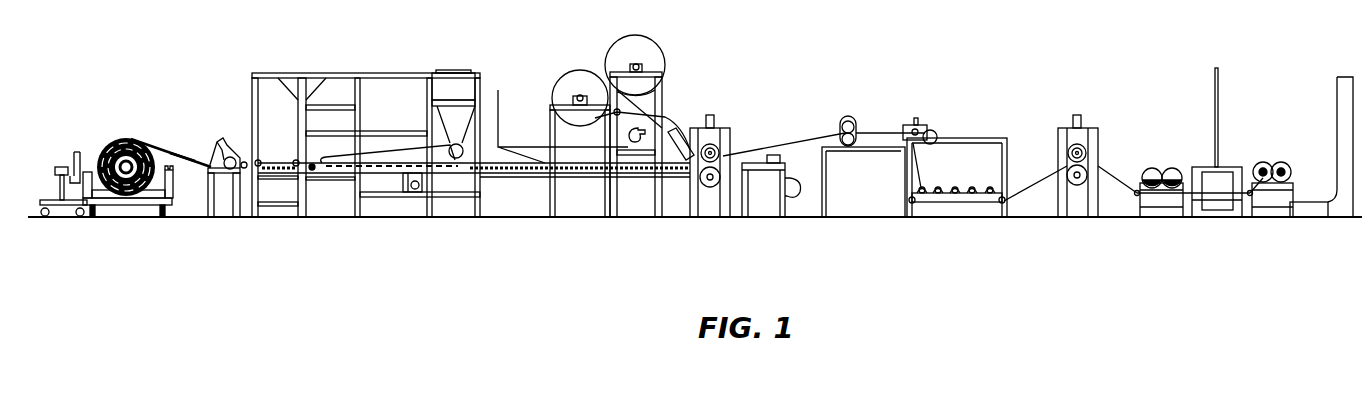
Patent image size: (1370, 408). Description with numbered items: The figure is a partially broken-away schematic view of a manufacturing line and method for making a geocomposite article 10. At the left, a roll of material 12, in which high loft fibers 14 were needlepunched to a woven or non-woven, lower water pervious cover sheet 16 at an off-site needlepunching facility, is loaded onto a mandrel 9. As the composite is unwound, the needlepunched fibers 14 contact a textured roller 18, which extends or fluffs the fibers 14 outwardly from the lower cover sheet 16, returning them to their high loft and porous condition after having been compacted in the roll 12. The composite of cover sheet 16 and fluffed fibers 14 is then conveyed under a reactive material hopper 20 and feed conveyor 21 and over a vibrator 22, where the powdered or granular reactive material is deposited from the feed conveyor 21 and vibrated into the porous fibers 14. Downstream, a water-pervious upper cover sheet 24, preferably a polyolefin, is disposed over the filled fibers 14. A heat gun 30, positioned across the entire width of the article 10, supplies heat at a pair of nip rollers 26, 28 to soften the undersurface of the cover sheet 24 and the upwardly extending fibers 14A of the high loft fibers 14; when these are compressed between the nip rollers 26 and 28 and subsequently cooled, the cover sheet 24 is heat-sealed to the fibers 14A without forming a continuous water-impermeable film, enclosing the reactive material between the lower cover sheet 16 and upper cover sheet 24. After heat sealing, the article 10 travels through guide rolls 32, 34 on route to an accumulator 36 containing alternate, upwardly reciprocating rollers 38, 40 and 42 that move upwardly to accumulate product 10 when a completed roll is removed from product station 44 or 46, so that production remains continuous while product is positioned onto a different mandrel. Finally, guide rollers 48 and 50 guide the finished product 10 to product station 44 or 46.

The mandrel 9 is at (126, 190).
The geocomposite article 10 is at (1115, 178).
The roll of material 12 is at (114, 142).
The high loft fibers 14 is at (158, 135).
The upwardly extending fibers 14A is at (191, 163).
The lower water pervious cover sheet 16 is at (193, 166).
The textured roller 18 is at (218, 147).
The reactive material hopper 20 is at (455, 90).
The feed conveyor 21 is at (387, 155).
The vibrator 22 is at (406, 180).
The water-pervious cover sheet 24 is at (650, 103).
The nip roller 26 is at (718, 130).
The nip roller 28 is at (710, 188).
The heat gun 30 is at (691, 152).
The guide roll 32 is at (852, 125).
The guide roll 34 is at (855, 146).
The accumulator 36 is at (965, 103).
The reciprocating roller 38 is at (924, 194).
The reciprocating roller 40 is at (957, 194).
The reciprocating roller 42 is at (992, 194).
The product station 44 is at (1165, 147).
The product station 46 is at (1274, 146).
The guide roller 48 is at (1080, 145).
The guide roller 50 is at (1078, 185).